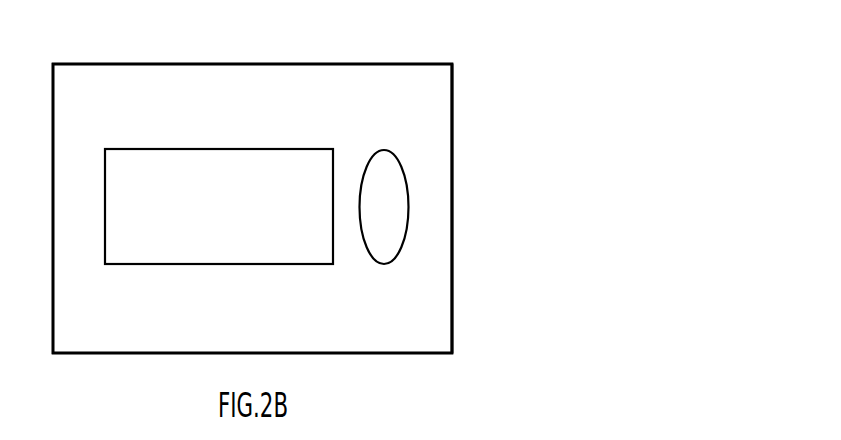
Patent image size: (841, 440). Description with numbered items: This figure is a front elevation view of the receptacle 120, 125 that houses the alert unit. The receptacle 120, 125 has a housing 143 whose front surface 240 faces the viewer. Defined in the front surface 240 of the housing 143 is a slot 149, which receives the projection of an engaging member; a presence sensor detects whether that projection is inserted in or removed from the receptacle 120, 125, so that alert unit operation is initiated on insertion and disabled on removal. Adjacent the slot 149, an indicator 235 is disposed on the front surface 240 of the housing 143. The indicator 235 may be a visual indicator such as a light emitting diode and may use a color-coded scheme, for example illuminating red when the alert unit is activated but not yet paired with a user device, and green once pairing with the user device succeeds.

The receptacle 120 is at (408, 55).
The receptacle 125 is at (415, 45).
The housing 143 is at (452, 100).
The slot 149 is at (226, 219).
The indicator 235 is at (409, 207).
The front surface 240 is at (408, 307).